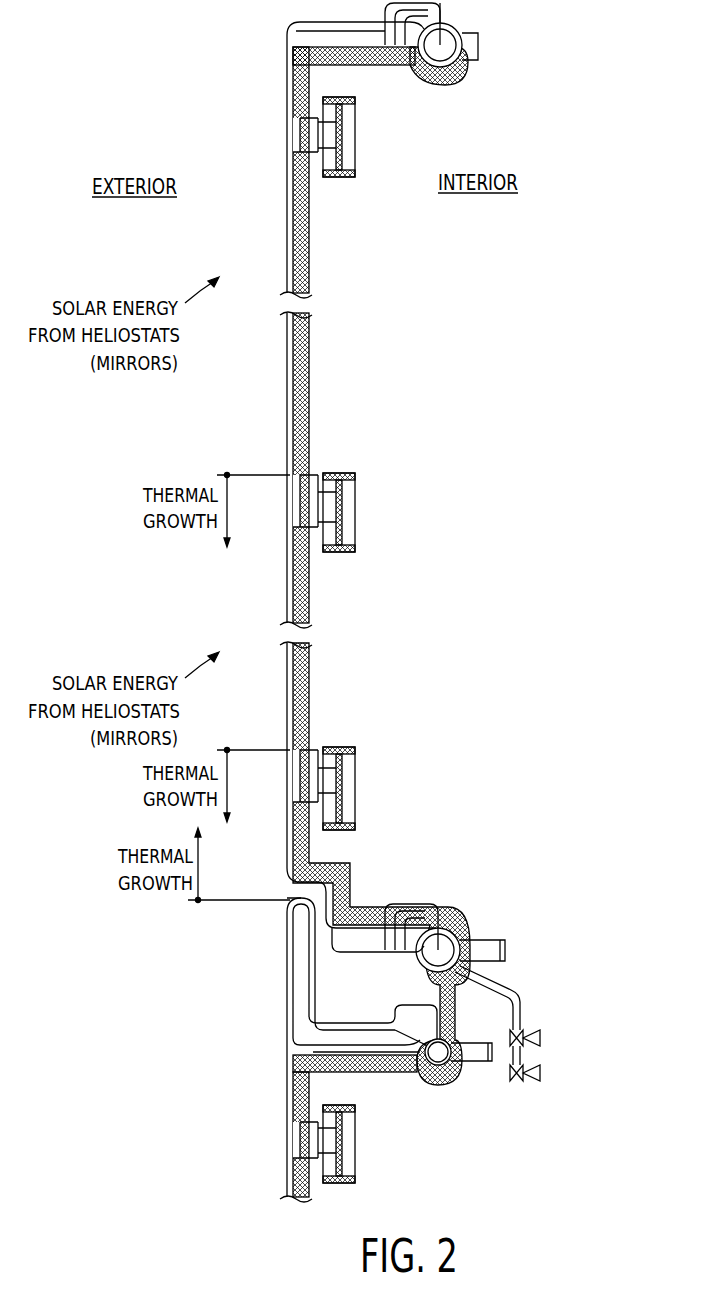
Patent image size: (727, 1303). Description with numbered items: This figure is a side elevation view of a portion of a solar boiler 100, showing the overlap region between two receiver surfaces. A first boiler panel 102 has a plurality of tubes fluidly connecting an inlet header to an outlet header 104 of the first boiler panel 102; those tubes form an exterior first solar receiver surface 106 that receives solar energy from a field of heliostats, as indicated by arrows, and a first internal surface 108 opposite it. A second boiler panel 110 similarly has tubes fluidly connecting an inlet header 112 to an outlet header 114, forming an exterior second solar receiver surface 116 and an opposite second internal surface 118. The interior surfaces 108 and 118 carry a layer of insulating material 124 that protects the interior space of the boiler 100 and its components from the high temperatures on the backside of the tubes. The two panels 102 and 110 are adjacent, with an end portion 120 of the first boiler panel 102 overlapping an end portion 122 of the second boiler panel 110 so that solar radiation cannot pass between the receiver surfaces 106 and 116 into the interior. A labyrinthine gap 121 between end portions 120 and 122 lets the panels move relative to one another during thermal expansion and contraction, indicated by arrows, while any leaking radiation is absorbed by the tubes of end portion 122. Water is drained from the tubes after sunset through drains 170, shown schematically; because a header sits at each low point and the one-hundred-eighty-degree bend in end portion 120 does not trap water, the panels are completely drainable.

The solar boiler 100 is at (194, 57).
The first boiler panel 102 is at (290, 1180).
The outlet header 104 is at (440, 1084).
The first solar receiver surface 106 is at (288, 1020).
The first internal surface 108 is at (305, 1078).
The second boiler panel 110 is at (290, 385).
The inlet header 112 is at (447, 930).
The outlet header 114 is at (452, 55).
The second solar receiver surface 116 is at (290, 212).
The second internal surface 118 is at (303, 221).
The end portion 120 is at (288, 942).
The gap 121 is at (287, 886).
The end portion 122 is at (346, 898).
The layer of insulating material 124 is at (310, 406).
The drains 170 is at (522, 1013).